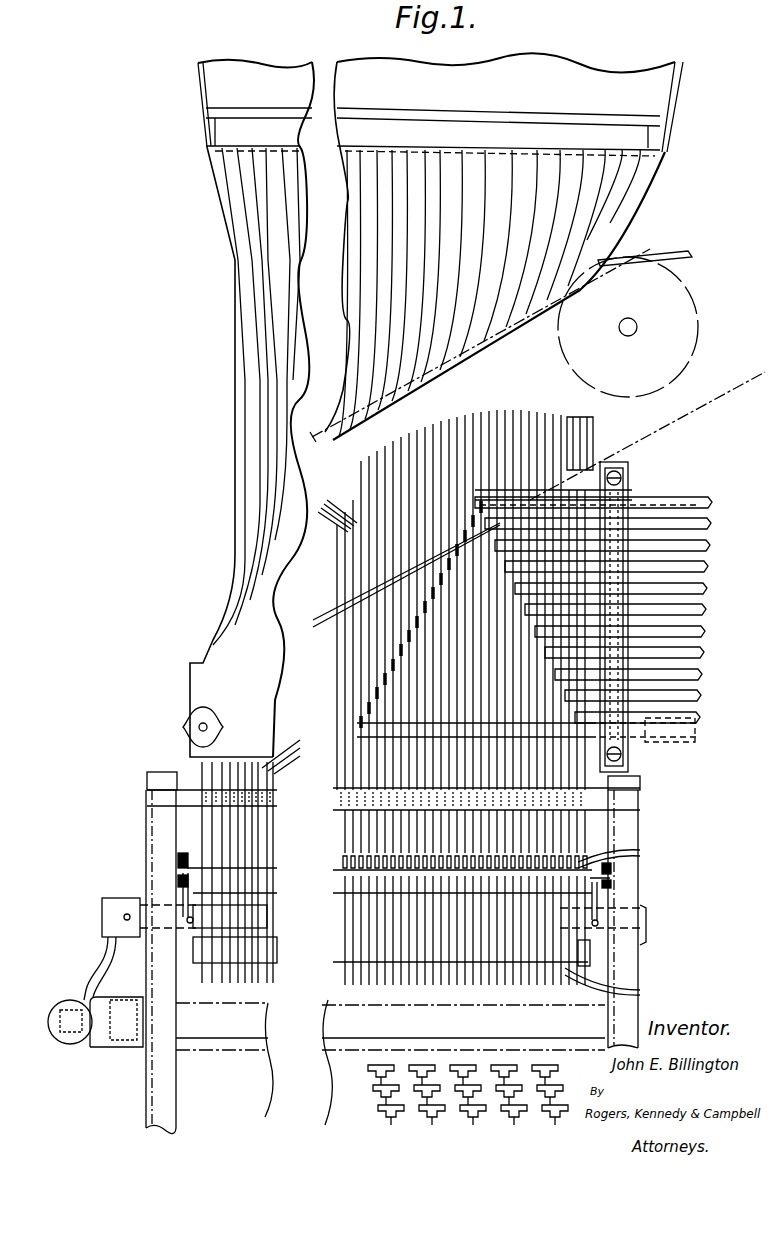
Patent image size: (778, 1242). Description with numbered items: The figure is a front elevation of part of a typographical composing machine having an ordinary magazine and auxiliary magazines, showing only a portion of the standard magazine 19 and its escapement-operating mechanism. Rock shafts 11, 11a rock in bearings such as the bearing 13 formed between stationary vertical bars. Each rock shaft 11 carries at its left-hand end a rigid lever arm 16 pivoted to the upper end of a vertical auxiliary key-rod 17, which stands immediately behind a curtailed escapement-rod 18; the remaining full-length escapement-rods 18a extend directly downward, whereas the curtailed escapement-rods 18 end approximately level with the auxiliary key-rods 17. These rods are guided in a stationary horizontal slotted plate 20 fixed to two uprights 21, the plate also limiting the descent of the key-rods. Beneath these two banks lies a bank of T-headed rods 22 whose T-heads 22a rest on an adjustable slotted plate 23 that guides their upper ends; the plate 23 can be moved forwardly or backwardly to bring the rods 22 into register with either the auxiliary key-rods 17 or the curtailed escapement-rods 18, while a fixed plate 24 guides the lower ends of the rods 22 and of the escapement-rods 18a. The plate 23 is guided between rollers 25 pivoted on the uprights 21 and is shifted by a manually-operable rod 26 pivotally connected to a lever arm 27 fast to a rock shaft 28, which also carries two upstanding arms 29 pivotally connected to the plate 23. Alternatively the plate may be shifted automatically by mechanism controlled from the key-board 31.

The rock shaft 11 is at (697, 735).
The rock shaft 11a is at (410, 707).
The bearing 13 is at (630, 482).
The lever arm 16 is at (598, 705).
The auxiliary key-rod 17 is at (365, 847).
The curtailed escapement-rod 18 is at (390, 440).
The full-length escapement-rod 18a is at (381, 628).
The standard magazine 19 is at (650, 101).
The stationary horizontal slotted plate 20 is at (197, 785).
The upright 21 is at (160, 832).
The T-headed rod 22 is at (640, 990).
The T-head 22a is at (640, 850).
The adjustable slotted plate 23 is at (350, 868).
The fixed plate 24 is at (273, 968).
The roller 25 is at (182, 870).
The manually-operable rod 26 is at (57, 1003).
The lever arm 27 is at (100, 962).
The rock shaft 28 is at (102, 915).
The upstanding arm 29 is at (190, 907).
The key-board 31 is at (367, 1070).